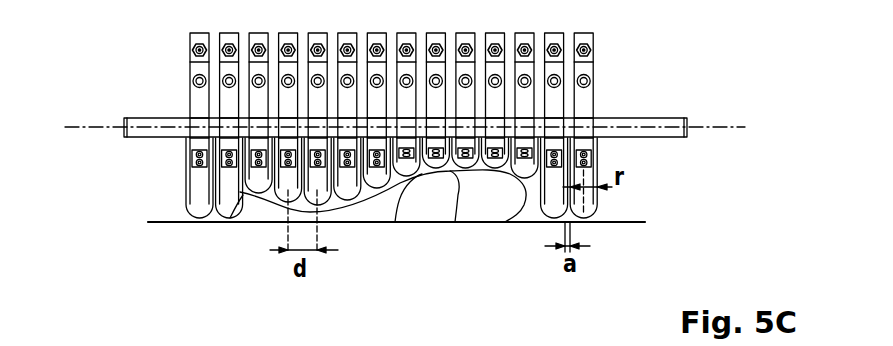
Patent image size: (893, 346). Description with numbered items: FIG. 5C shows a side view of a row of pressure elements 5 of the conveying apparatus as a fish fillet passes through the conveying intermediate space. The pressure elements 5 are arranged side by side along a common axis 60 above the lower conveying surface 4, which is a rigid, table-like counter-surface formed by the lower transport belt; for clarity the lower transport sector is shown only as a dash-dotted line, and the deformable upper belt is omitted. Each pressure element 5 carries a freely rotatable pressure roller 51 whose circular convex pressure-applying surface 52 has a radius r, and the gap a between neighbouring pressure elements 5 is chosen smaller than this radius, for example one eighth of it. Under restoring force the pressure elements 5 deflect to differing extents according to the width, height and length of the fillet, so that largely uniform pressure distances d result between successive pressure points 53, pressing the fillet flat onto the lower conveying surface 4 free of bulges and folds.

The axis of rotation 60 is at (91, 125).
The pressure element 5 is at (405, 125).
The pressure roller 51 is at (223, 197).
The pressure-applying surface 52 is at (277, 220).
The pressure point 53 is at (397, 205).
The lower conveying surface 4 is at (416, 251).